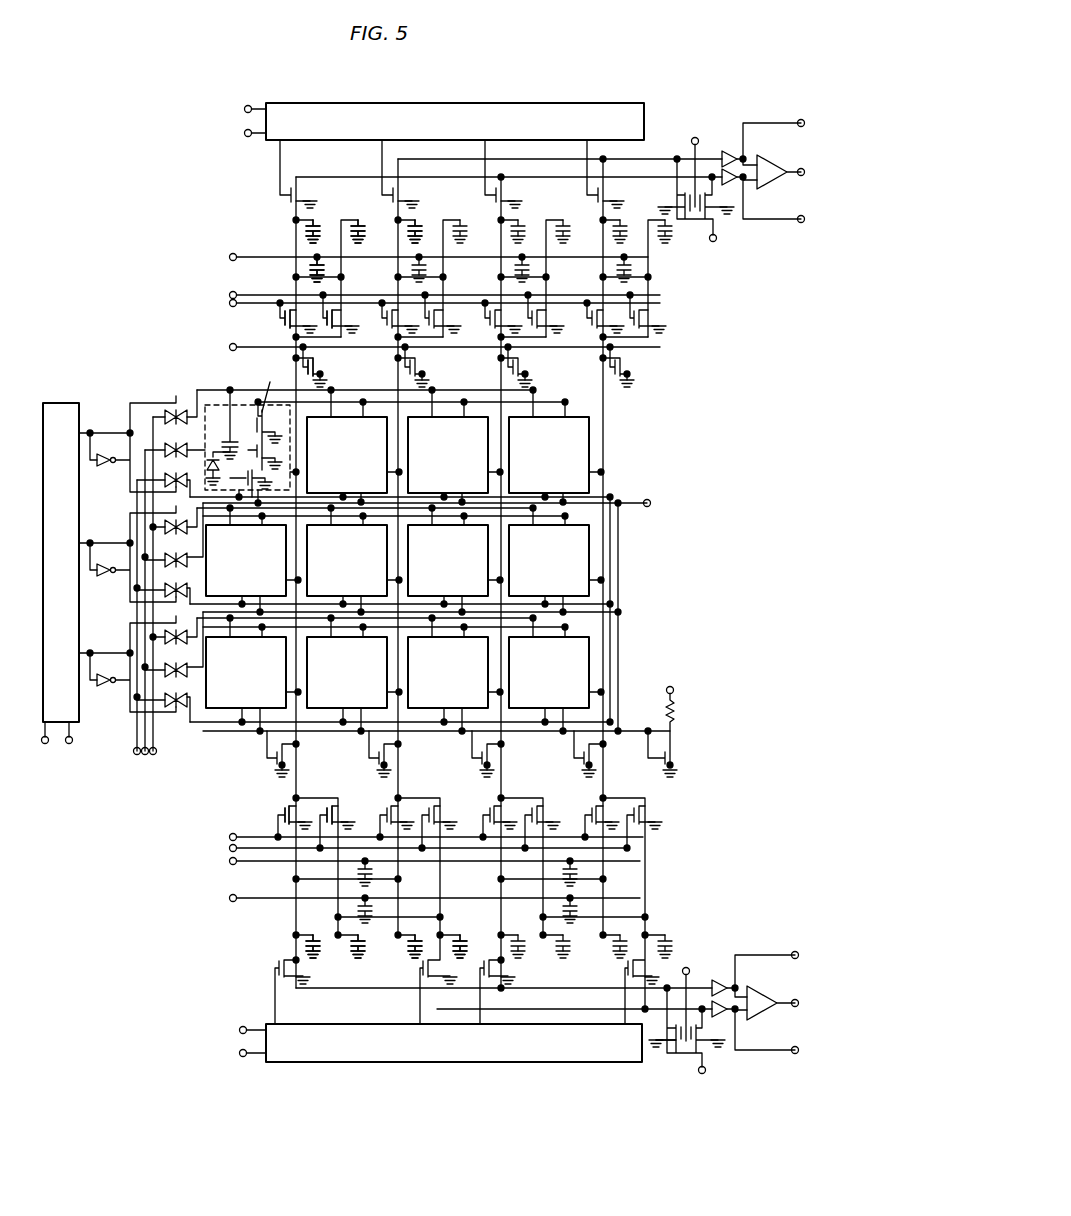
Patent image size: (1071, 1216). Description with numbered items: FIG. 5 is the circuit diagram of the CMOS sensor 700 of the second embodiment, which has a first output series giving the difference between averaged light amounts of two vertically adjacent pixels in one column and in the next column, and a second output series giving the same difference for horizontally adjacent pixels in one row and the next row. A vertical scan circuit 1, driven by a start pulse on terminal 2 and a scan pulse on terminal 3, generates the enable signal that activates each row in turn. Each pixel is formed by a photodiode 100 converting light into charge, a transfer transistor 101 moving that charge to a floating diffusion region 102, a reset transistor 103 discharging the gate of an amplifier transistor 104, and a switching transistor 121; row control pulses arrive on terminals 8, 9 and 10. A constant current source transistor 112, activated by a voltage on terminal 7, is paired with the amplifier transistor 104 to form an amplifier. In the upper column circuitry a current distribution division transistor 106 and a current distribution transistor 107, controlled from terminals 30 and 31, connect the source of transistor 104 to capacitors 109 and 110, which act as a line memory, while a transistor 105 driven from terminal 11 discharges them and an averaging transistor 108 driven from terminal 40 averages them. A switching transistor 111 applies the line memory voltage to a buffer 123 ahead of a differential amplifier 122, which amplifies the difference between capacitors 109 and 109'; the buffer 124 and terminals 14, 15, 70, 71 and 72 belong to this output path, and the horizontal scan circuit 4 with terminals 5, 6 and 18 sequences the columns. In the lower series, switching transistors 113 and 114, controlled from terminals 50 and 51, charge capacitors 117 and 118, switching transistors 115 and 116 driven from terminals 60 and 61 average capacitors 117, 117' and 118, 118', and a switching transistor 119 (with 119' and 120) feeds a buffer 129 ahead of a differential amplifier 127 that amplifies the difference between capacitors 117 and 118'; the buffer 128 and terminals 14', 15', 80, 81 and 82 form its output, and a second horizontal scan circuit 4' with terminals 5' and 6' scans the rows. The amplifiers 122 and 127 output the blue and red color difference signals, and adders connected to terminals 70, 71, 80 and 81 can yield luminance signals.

The solid-state imaging device 700 is at (681, 63).
The vertical scan circuit 1 is at (62, 403).
The terminal 2 is at (45, 745).
The terminal 3 is at (69, 745).
The horizontal scan circuit 4 is at (455, 104).
The horizontal shift register 4' is at (454, 1064).
The input terminal 5 is at (235, 99).
The input terminal 6 is at (235, 131).
The input terminal 5' is at (233, 1009).
The input terminal 6' is at (230, 1042).
The terminal 7 is at (670, 686).
The terminal 8 is at (137, 755).
The terminal 9 is at (145, 755).
The terminal 10 is at (153, 755).
The terminal 11 is at (229, 347).
The control terminal 14 is at (696, 164).
The control terminal 15 is at (701, 260).
The control terminal 14' is at (687, 985).
The control terminal 15' is at (700, 1095).
The output terminal 18 is at (648, 499).
The terminal 30 is at (229, 303).
The terminal 31 is at (229, 295).
The terminal 40 is at (229, 257).
The terminal 50 is at (229, 837).
The terminal 51 is at (229, 848).
The terminal 60 is at (229, 861).
The terminal 61 is at (229, 898).
The terminal 70 is at (801, 119).
The terminal 71 is at (801, 223).
The output terminal 72 is at (801, 176).
The terminal 80 is at (795, 951).
The terminal 81 is at (795, 1054).
The output terminal 82 is at (795, 1007).
The photodiode 100 is at (206, 412).
The transfer transistor 101 is at (230, 438).
The floating diffusion region 102 is at (243, 500).
The reset transistor 103 is at (265, 480).
The amplifier transistor 104 is at (290, 452).
The transistor 105 is at (318, 367).
The current distribution division transistor 106 is at (284, 318).
The current distribution transistor 107 is at (330, 315).
The averaging transistor 108 is at (325, 270).
The capacitor 109 is at (281, 230).
The capacitor 109' is at (489, 263).
The capacitor 110 is at (358, 222).
The switching transistor 111 is at (288, 195).
The constant current source transistor 112 is at (268, 762).
The switching transistor 113 is at (282, 808).
The switching transistor 114 is at (333, 810).
The switching transistor 115 is at (372, 872).
The switching transistor 116 is at (358, 912).
The capacitor 117 is at (302, 976).
The capacitor 117' is at (391, 959).
The capacitor 118 is at (349, 976).
The capacitor 118' is at (472, 930).
The switching transistor 119 is at (262, 980).
The horizontal selection transistor 119' is at (409, 991).
The reset transistor 120 is at (660, 1045).
The switching transistor 121 is at (285, 428).
The differential amplifier 122 is at (770, 160).
The buffer 123 is at (732, 183).
The output buffer 124 is at (722, 152).
The differential amplifier 127 is at (760, 1003).
The output buffer 128 is at (712, 985).
The buffer 129 is at (715, 1018).